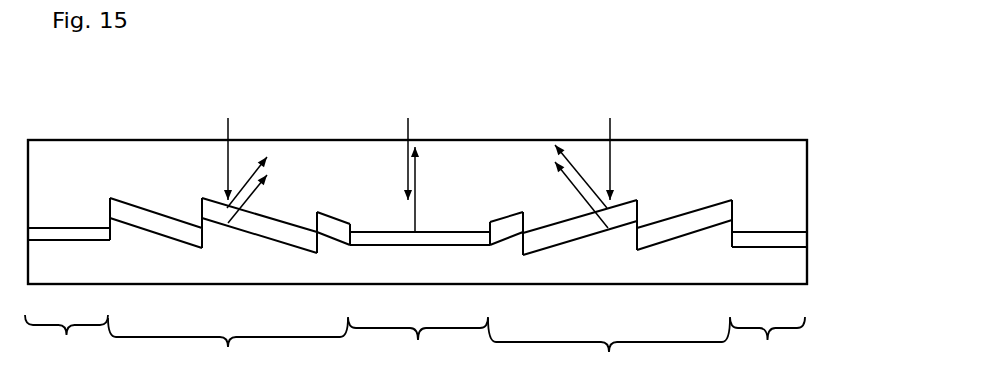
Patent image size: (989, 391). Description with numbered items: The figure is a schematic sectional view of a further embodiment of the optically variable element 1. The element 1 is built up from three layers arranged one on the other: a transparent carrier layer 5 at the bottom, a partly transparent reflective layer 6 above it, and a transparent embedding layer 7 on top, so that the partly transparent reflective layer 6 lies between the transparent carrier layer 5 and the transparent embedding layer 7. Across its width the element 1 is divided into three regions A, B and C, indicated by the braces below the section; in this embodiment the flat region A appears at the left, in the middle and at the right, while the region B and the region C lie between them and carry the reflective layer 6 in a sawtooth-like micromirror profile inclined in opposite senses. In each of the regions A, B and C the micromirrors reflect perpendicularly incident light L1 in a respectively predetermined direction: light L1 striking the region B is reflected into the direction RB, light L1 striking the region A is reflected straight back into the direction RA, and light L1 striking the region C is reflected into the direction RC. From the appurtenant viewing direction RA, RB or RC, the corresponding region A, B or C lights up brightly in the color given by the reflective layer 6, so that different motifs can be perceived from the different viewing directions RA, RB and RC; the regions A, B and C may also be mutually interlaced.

The optically variable element 1 is at (77, 137).
The transparent carrier layer 5 is at (787, 263).
The partly transparent reflective layer 6 is at (787, 238).
The transparent embedding layer 7 is at (788, 170).
The incident light L1 is at (228, 128).
The predetermined reflection direction of region A RA is at (415, 182).
The predetermined reflection direction of region B RB is at (243, 182).
The predetermined reflection direction of region C RC is at (585, 172).
The region A is at (415, 345).
The region B is at (228, 347).
The region C is at (609, 347).